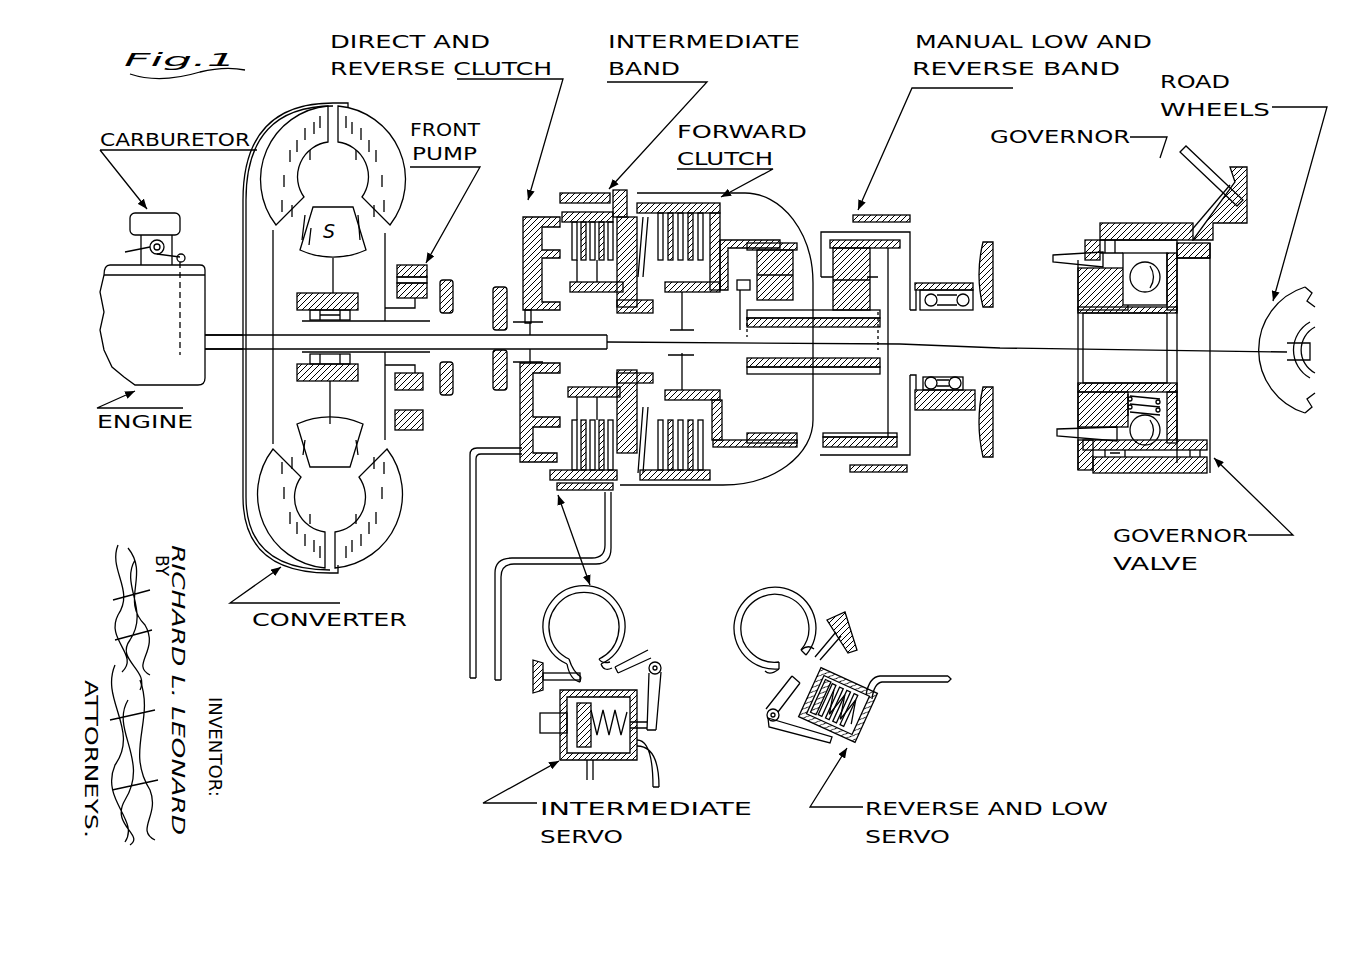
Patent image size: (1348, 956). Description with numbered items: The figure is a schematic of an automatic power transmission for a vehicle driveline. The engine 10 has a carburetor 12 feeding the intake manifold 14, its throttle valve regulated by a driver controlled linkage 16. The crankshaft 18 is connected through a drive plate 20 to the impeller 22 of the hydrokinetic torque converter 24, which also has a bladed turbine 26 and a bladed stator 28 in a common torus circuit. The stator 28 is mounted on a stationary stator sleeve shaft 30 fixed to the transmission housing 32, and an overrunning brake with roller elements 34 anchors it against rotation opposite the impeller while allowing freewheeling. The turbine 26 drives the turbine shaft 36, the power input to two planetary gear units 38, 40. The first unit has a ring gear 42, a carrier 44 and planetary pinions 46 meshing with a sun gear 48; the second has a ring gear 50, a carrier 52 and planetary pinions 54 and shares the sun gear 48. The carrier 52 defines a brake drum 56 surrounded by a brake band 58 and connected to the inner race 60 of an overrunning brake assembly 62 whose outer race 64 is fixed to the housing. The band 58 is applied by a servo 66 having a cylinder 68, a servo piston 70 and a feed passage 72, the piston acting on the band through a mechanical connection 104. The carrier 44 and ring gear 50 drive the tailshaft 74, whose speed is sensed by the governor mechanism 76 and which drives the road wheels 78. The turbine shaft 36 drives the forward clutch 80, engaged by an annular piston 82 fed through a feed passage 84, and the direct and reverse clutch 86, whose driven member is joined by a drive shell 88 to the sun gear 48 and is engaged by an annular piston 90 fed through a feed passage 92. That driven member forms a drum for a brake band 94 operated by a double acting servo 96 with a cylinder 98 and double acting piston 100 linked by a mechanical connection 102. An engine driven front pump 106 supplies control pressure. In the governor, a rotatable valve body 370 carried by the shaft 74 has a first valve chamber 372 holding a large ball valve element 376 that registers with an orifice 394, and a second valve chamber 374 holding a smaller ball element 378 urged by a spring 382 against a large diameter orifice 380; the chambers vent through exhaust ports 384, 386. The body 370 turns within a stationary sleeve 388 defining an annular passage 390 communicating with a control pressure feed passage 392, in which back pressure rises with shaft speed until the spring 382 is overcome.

The engine 10 is at (215, 273).
The carburetor 12 is at (175, 212).
The intake manifold 14 is at (140, 247).
The driver controlled linkage 16 is at (165, 240).
The crankshaft 18 is at (214, 334).
The drive plate 20 is at (240, 396).
The impeller 22 is at (394, 188).
The hydrokinetic torque converter 24 is at (393, 107).
The bladed turbine 26 is at (268, 128).
The bladed stator 28 is at (316, 289).
The stator sleeve shaft 30 is at (367, 300).
The transmission housing 32 is at (447, 281).
The roller elements 34 is at (322, 389).
The turbine shaft 36 is at (465, 327).
The planetary gear unit 38 is at (773, 237).
The second planetary gear unit 40 is at (878, 262).
The ring gear 42 is at (740, 443).
The carrier 44 is at (747, 310).
The planetary pinions 46 is at (757, 227).
The sun gear 48 is at (775, 373).
The ring gear 50 is at (855, 433).
The carrier 52 is at (810, 232).
The planetary pinions 54 is at (857, 257).
The brake drum 56 is at (830, 457).
The brake band 58 is at (893, 473).
The inner race 60 is at (944, 377).
The overrunning brake assembly 62 is at (928, 311).
The outer race 64 is at (947, 412).
The fluid pressure operated servo 66 is at (884, 692).
The cylinder 68 is at (878, 715).
The servo piston 70 is at (890, 702).
The feed passage 72 is at (933, 674).
The tailshaft 74 is at (1050, 333).
The governor mechanism 76 is at (1138, 314).
The road wheels 78 is at (1277, 321).
The forward clutch 80 is at (663, 488).
The annular piston 82 is at (623, 388).
The feed passage 84 is at (531, 540).
The direct and reverse clutch 86 is at (580, 193).
The drive shell 88 is at (735, 487).
The annular piston 90 is at (530, 407).
The feed passage 92 is at (471, 528).
The brake band 94 is at (556, 486).
The double acting servo 96 is at (560, 702).
The cylinder 98 is at (640, 713).
The double acting piston 100 is at (640, 760).
The mechanical connection 102 is at (662, 686).
The mechanical connection 104 is at (797, 727).
The front pump 106 is at (409, 435).
The governor valve body 370 is at (1085, 290).
The first cylindrical valve chamber 372 is at (1173, 278).
The second cylindrical valve chamber 374 is at (1083, 387).
The large diameter ball valve element 376 is at (1213, 259).
The smaller ball element 378 is at (1162, 421).
The large diameter orifice 380 is at (1143, 460).
The spring 382 is at (1160, 399).
The exhaust port 384 is at (1085, 430).
The exhaust port 386 is at (1110, 267).
The stationary sleeve 388 is at (1128, 224).
The annular passage 390 is at (1180, 458).
The control pressure feed passage 392 is at (1213, 142).
The orifice 394 is at (1188, 230).